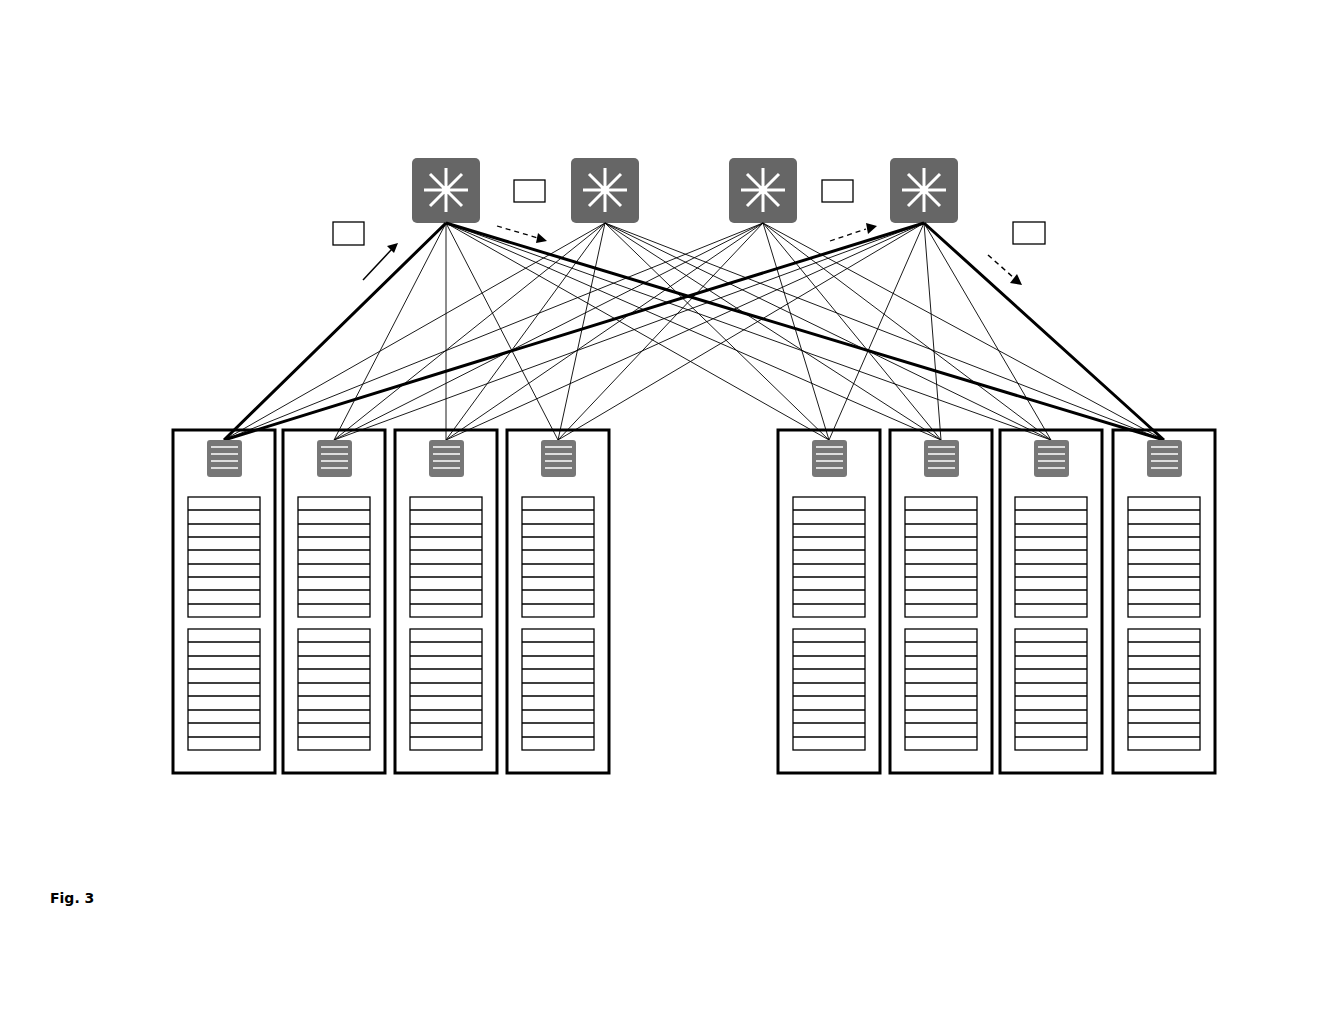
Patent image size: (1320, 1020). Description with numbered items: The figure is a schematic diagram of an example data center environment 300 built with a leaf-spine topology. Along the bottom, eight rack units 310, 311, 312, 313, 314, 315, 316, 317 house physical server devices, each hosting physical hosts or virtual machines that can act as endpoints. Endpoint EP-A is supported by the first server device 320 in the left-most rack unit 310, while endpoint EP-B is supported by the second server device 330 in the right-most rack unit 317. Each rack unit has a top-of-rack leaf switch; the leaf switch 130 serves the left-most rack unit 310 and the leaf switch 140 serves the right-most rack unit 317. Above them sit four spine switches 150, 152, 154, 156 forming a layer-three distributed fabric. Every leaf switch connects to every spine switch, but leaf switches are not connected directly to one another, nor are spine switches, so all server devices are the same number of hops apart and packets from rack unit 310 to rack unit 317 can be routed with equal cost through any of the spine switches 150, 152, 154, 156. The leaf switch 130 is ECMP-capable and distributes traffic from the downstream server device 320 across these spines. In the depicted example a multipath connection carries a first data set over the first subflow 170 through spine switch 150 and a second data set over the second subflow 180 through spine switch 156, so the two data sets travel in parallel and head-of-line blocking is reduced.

The data center environment 300 is at (100, 90).
The leaf switch R1 130 is at (208, 452).
The leaf switch R2 140 is at (1183, 452).
The spine switch R3 150 is at (446, 158).
The spine switch R4 152 is at (605, 158).
The spine switch R5 154 is at (763, 158).
The spine switch R6 156 is at (924, 158).
The first subflow 170 is at (328, 258).
The second subflow 180 is at (1049, 258).
The rack unit 310 is at (187, 621).
The rack unit 311 is at (336, 766).
The rack unit 312 is at (448, 766).
The rack unit 313 is at (560, 766).
The rack unit 314 is at (831, 766).
The rack unit 315 is at (941, 766).
The rack unit 316 is at (1053, 766).
The rack unit 317 is at (1202, 620).
The first server device 320 is at (205, 505).
The server device hosting EP-B 330 is at (1188, 507).